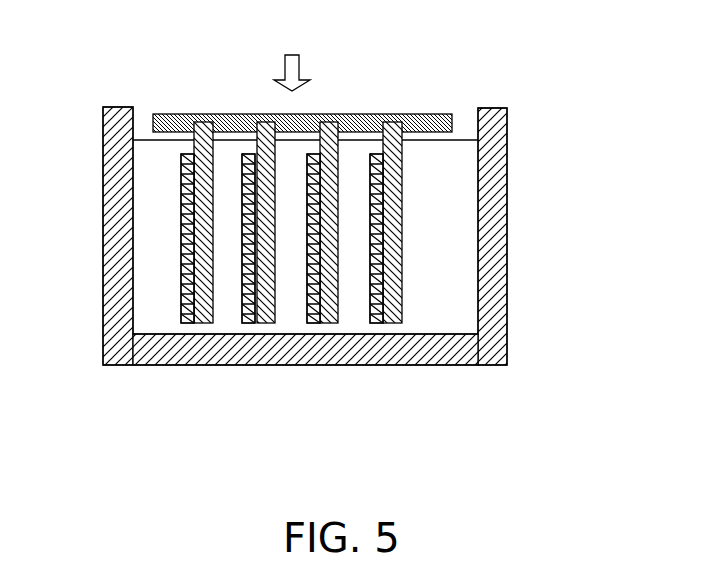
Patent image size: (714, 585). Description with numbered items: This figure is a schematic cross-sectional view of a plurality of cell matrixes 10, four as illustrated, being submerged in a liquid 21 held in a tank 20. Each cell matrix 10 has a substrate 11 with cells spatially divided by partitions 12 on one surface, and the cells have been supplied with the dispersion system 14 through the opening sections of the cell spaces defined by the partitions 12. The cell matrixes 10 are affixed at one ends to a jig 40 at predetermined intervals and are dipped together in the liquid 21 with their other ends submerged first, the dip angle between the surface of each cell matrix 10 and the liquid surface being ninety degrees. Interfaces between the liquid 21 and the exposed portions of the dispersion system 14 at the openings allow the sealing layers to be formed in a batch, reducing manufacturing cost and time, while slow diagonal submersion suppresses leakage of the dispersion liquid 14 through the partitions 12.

The cell matrix 10 is at (222, 290).
The substrate 11 is at (203, 323).
The partition 12 is at (181, 188).
The dispersion system 14 is at (181, 245).
The tank 20 is at (508, 238).
The liquid 21 is at (458, 232).
The jig 40 is at (303, 114).